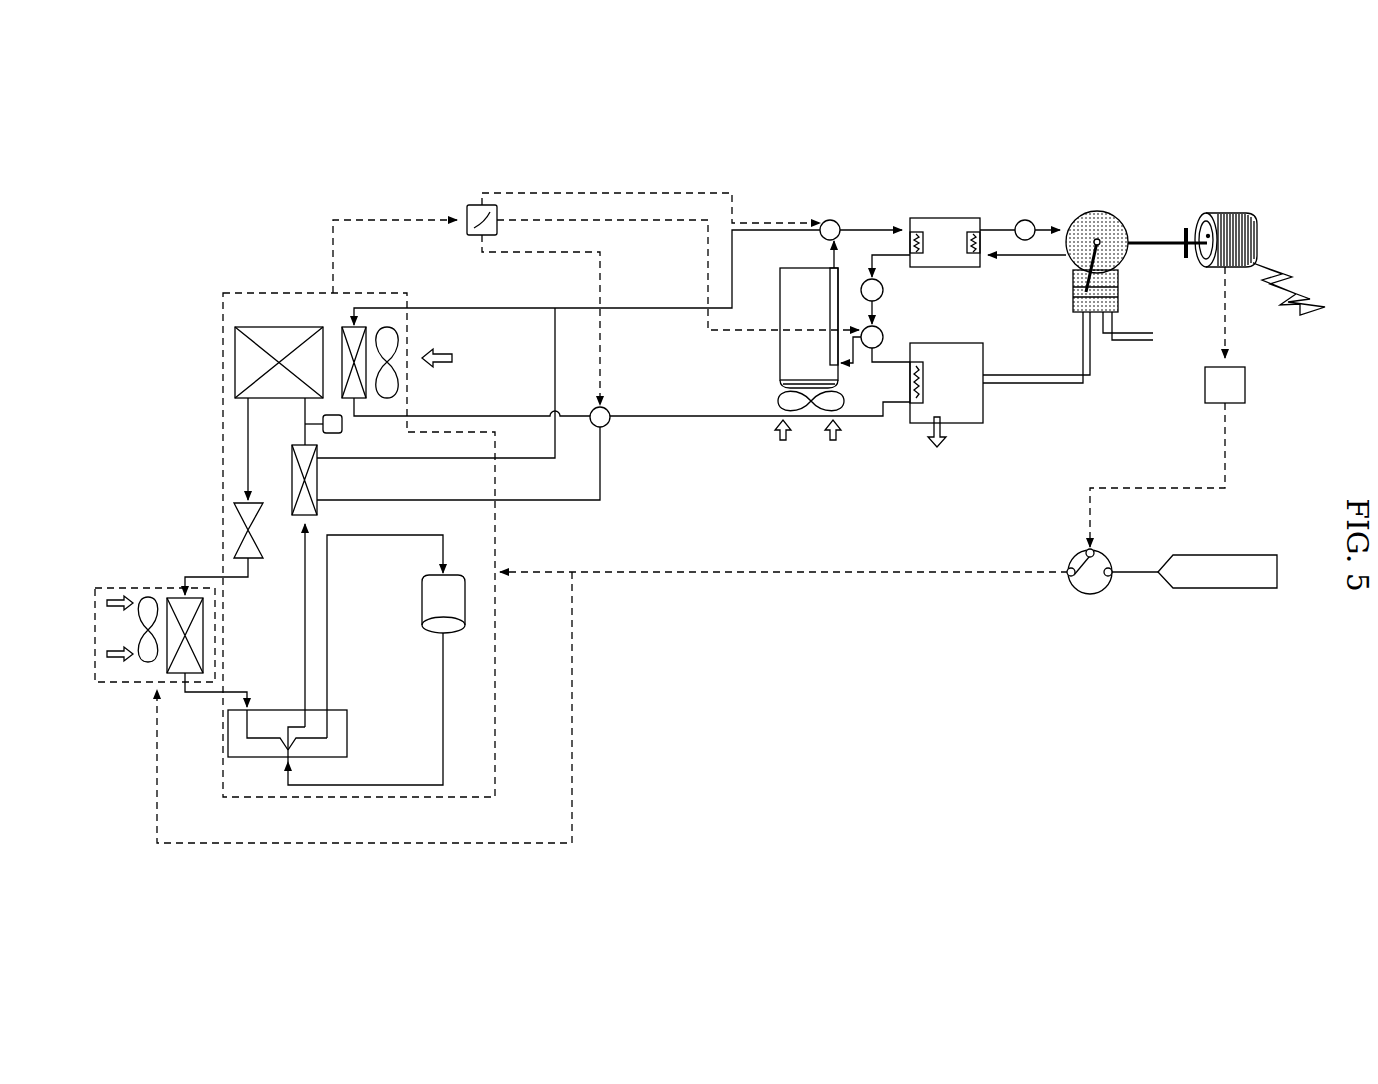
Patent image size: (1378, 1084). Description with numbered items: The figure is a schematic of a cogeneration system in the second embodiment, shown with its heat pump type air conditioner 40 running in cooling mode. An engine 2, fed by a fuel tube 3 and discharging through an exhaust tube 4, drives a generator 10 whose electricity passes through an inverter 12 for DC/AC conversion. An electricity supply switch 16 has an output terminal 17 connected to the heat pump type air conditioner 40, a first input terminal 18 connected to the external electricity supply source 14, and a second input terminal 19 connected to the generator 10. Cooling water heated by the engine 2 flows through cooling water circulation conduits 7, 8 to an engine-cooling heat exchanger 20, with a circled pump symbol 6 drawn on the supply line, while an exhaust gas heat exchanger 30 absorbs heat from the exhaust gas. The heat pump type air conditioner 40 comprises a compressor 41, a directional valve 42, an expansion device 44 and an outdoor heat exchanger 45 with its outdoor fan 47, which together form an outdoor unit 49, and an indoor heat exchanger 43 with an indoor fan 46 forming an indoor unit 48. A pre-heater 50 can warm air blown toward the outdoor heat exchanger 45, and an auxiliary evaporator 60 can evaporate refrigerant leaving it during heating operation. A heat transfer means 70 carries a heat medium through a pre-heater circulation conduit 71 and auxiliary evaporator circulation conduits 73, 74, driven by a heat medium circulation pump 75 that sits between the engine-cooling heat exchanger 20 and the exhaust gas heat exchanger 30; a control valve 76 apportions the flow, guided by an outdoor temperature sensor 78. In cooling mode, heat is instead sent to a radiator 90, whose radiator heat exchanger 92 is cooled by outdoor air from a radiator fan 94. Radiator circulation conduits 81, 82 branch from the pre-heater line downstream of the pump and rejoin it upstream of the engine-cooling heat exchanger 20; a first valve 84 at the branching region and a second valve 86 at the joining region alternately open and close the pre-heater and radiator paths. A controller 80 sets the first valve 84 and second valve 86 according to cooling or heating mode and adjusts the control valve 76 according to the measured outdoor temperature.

The engine 2 is at (1115, 212).
The fuel tube 3 is at (1133, 342).
The exhaust tube 4 is at (1030, 384).
The pump 6 is at (1027, 218).
The cooling water circulation conduit 7 is at (1032, 257).
The cooling water circulation conduit 8 is at (998, 226).
The generator 10 is at (1223, 212).
The inverter 12 is at (1232, 380).
The external electricity supply source 14 is at (1225, 590).
The electricity supply switch 16 is at (1080, 592).
The output terminal 17 is at (1067, 570).
The first input terminal 18 is at (1110, 580).
The second input terminal 19 is at (1094, 550).
The engine-cooling heat exchanger 20 is at (935, 218).
The exhaust gas heat exchanger 30 is at (915, 425).
The heat pump type air conditioner 40 is at (135, 412).
The compressor 41 is at (422, 597).
The directional valve 42 is at (240, 758).
The indoor heat exchanger 43 is at (170, 670).
The expansion device 44 is at (235, 517).
The outdoor heat exchanger 45 is at (235, 367).
The indoor fan 46 is at (143, 590).
The outdoor fan 47 is at (387, 327).
The indoor unit 48 is at (157, 597).
The outdoor unit 49 is at (222, 320).
The pre-heater 50 is at (350, 327).
The auxiliary evaporator 60 is at (293, 483).
The heat transfer means 70 is at (614, 515).
The pre-heater circulation conduit 71 is at (745, 230).
The auxiliary evaporator circulation conduit 73 is at (583, 503).
The auxiliary evaporator circulation conduit 74 is at (553, 340).
The heat medium circulation pump 75 is at (883, 284).
The control valve 76 is at (603, 408).
The outdoor temperature sensor 78 is at (323, 426).
The controller 80 is at (468, 205).
The radiator circulation conduit 81 is at (852, 368).
The radiator circulation conduit 82 is at (828, 258).
The first valve 84 is at (883, 334).
The second valve 86 is at (838, 222).
The radiator 90 is at (775, 360).
The radiator heat exchanger 92 is at (778, 372).
The radiator fan 94 is at (818, 412).